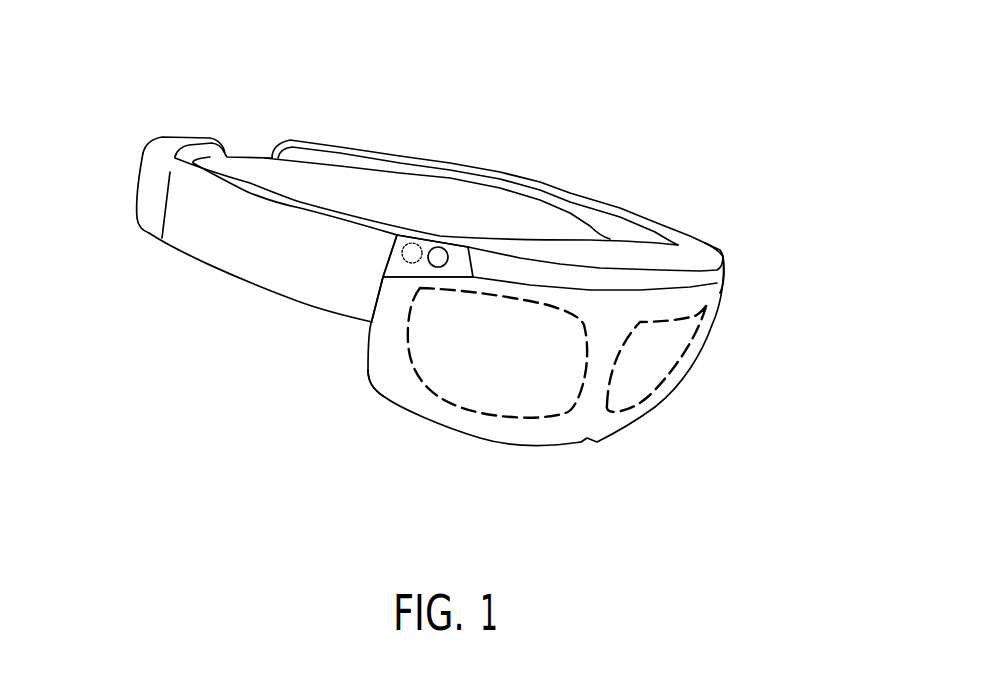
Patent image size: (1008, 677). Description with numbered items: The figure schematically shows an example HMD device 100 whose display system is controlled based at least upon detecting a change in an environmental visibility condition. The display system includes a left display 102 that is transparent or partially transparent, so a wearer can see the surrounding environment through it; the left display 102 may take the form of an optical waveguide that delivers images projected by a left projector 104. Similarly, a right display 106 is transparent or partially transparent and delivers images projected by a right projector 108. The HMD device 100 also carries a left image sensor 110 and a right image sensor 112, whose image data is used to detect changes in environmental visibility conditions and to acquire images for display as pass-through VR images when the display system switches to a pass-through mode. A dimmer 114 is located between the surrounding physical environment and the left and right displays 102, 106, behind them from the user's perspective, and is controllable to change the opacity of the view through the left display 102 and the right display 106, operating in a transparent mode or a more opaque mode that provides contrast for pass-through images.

The HMD device 100 is at (126, 47).
The left display 102 is at (680, 415).
The left projector 104 is at (702, 214).
The right display 106 is at (466, 437).
The right projector 108 is at (370, 248).
The left image sensor 110 is at (730, 236).
The right image sensor 112 is at (436, 251).
The dimmer 114 is at (378, 391).